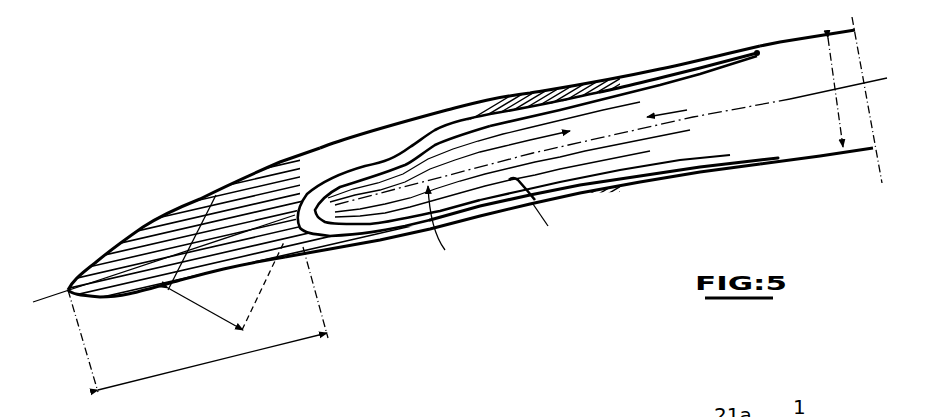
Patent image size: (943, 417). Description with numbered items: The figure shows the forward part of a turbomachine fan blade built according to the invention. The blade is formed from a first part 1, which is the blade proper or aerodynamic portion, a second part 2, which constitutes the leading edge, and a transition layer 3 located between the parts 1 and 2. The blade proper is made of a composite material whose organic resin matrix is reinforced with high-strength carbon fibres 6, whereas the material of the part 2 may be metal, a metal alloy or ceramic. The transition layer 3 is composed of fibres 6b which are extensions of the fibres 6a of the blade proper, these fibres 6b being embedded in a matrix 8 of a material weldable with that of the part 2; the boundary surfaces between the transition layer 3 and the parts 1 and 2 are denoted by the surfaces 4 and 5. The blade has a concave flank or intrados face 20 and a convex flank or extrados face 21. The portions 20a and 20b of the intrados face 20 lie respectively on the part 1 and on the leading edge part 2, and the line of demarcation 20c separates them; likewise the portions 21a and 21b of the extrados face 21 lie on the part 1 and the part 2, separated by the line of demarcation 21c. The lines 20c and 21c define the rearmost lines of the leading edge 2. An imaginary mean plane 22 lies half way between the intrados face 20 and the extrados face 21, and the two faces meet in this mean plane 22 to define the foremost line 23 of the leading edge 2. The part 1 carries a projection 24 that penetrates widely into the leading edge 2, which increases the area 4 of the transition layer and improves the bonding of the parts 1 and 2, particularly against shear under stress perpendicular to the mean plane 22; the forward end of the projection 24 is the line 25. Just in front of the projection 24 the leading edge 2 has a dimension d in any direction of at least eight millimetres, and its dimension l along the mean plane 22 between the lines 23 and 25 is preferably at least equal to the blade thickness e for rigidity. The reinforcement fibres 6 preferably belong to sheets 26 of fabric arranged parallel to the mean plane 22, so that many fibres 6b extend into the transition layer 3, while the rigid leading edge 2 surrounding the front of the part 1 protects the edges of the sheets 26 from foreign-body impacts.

The first part 1 is at (460, 196).
The second part 2 is at (204, 212).
The transition layer 3 is at (435, 130).
The boundary surface 4 is at (528, 120).
The boundary surface 5 is at (490, 105).
The carbon fibres 6 is at (688, 110).
The fibres 6a is at (580, 88).
The fibres 6b is at (332, 176).
The matrix 8 is at (388, 130).
The concave flank 20 is at (681, 212).
The portion of the intrados face 20a is at (805, 163).
The portion of the intrados face 20b is at (135, 294).
The line of demarcation 20c is at (774, 166).
The convex flank 21 is at (662, 54).
The portion of the extrados face 21a is at (777, 42).
The portion of the extrados face 21b is at (148, 234).
The line of demarcation 21c is at (753, 46).
The mean plane 22 is at (733, 110).
The foremost line 23 is at (68, 290).
The projection 24 is at (445, 232).
The forward end of the projection 25 is at (324, 292).
The sheets of fabric 26 is at (537, 216).